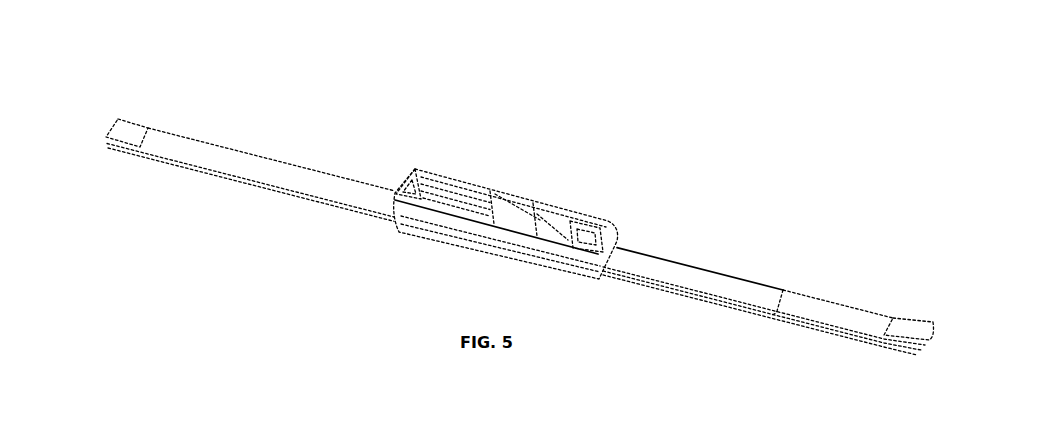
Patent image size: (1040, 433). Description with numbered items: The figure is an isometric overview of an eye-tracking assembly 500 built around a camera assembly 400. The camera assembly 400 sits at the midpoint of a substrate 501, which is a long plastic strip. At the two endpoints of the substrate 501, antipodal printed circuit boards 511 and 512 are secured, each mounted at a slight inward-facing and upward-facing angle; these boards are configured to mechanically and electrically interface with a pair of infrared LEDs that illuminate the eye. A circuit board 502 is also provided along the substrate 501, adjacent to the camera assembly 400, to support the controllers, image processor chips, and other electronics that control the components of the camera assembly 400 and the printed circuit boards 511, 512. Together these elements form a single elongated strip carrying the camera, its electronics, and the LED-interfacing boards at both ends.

The camera assembly 400 is at (546, 184).
The assembly 500 is at (317, 280).
The substrate 501 is at (810, 319).
The circuit board 502 is at (734, 285).
The printed circuit board 511 is at (130, 128).
The printed circuit board 512 is at (903, 319).